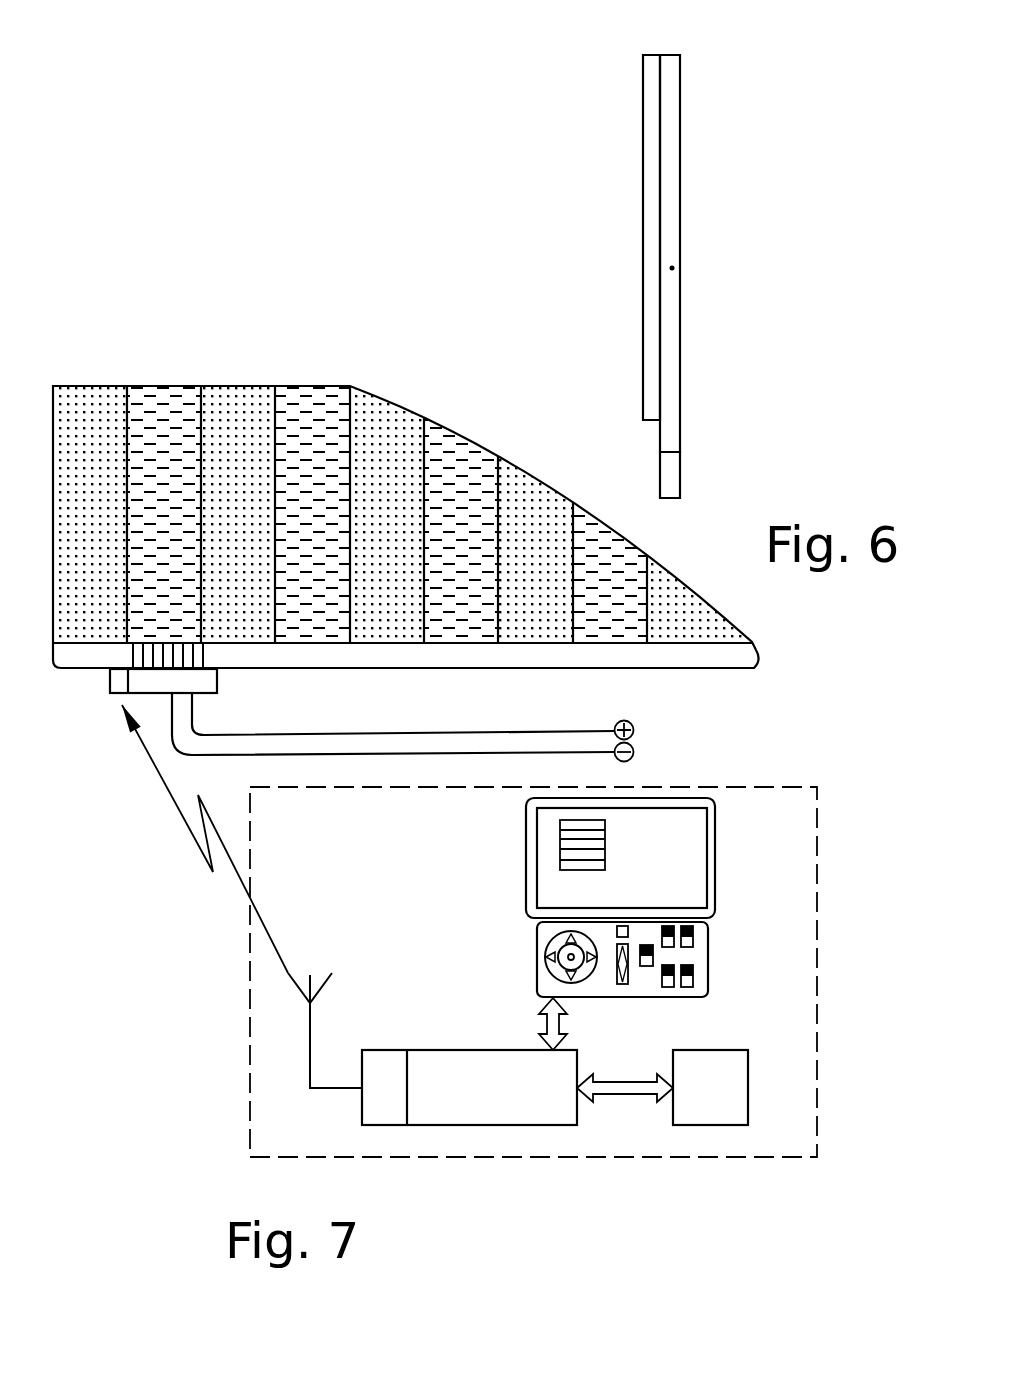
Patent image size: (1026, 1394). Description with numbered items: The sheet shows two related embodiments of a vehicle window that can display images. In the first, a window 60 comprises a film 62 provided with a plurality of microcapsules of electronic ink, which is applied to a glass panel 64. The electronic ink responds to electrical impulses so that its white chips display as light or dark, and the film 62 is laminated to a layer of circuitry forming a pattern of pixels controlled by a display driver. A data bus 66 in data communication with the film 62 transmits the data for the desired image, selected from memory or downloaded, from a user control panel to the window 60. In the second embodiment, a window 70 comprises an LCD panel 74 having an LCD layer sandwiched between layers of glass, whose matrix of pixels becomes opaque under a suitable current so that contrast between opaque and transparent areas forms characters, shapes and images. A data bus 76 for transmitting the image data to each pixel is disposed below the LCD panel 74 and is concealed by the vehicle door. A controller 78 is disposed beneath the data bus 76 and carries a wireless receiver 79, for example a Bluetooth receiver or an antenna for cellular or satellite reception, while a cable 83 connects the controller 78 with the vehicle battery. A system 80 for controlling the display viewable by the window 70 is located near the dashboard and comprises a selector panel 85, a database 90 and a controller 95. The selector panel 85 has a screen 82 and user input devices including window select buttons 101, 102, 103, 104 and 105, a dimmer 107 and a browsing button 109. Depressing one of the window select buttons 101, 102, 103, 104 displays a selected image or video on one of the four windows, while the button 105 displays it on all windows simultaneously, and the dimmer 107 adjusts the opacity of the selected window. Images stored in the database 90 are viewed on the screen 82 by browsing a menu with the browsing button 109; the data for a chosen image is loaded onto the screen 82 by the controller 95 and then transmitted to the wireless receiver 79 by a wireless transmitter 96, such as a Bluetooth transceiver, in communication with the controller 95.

In FIG. 6, the window 60 is at (679, 280).
In FIG. 6, the film 62 is at (668, 88).
In FIG. 6, the glass panel 64 is at (655, 350).
In FIG. 6, the data bus 66 is at (675, 478).
In FIG. 6, the window 70 is at (397, 526).
In FIG. 7, the window 70 is at (568, 958).
In FIG. 6, the LCD panel 74 is at (228, 398).
In FIG. 6, the data bus 76 is at (155, 662).
In FIG. 6, the controller 78 is at (200, 683).
In FIG. 6, the wireless receiver 79 is at (118, 682).
In FIG. 7, the system 80 is at (830, 1095).
In FIG. 7, the screen 82 is at (545, 840).
In FIG. 6, the cable 83 is at (342, 755).
In FIG. 7, the selector panel 85 is at (587, 953).
In FIG. 7, the database 90 is at (737, 1075).
In FIG. 7, the controller 95 is at (432, 1098).
In FIG. 7, the wireless transmitter 96 is at (385, 1067).
In FIG. 7, the window select button 101 is at (668, 925).
In FIG. 7, the window select button 102 is at (687, 940).
In FIG. 7, the window select button 103 is at (668, 982).
In FIG. 7, the window select button 104 is at (687, 982).
In FIG. 7, the window select button 105 is at (647, 960).
In FIG. 7, the dimmer 107 is at (530, 939).
In FIG. 7, the browsing button 109 is at (623, 983).